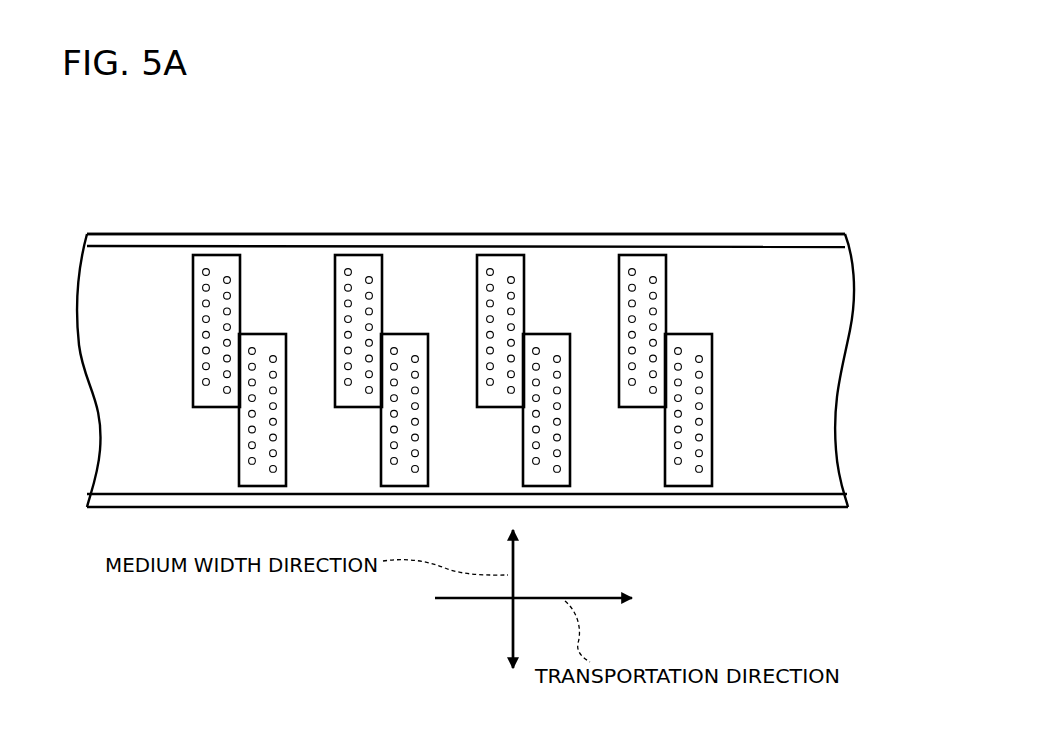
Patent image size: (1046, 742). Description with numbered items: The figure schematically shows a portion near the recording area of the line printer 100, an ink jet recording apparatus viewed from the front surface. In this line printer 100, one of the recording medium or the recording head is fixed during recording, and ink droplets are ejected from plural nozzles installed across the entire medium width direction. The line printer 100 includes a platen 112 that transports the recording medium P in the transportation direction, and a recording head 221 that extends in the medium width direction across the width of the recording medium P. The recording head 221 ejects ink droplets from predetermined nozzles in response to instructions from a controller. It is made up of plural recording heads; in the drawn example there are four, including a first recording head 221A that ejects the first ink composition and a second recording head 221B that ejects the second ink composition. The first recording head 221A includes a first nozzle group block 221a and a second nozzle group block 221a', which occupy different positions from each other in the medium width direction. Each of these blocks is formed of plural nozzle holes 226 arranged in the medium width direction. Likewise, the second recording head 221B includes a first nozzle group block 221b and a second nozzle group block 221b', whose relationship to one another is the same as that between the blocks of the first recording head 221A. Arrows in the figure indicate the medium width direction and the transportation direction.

The line printer 100 is at (762, 138).
The platen 112 is at (814, 247).
The recording medium P is at (128, 267).
The recording head 221 is at (722, 143).
The first recording head 221A is at (308, 185).
The second recording head 221B is at (453, 185).
The first nozzle group block 221a is at (191, 277).
The second nozzle group block 221a' is at (273, 333).
The first nozzle group block 221b is at (360, 294).
The second nozzle group block 221b' is at (414, 333).
The nozzle hole 226 is at (200, 268).